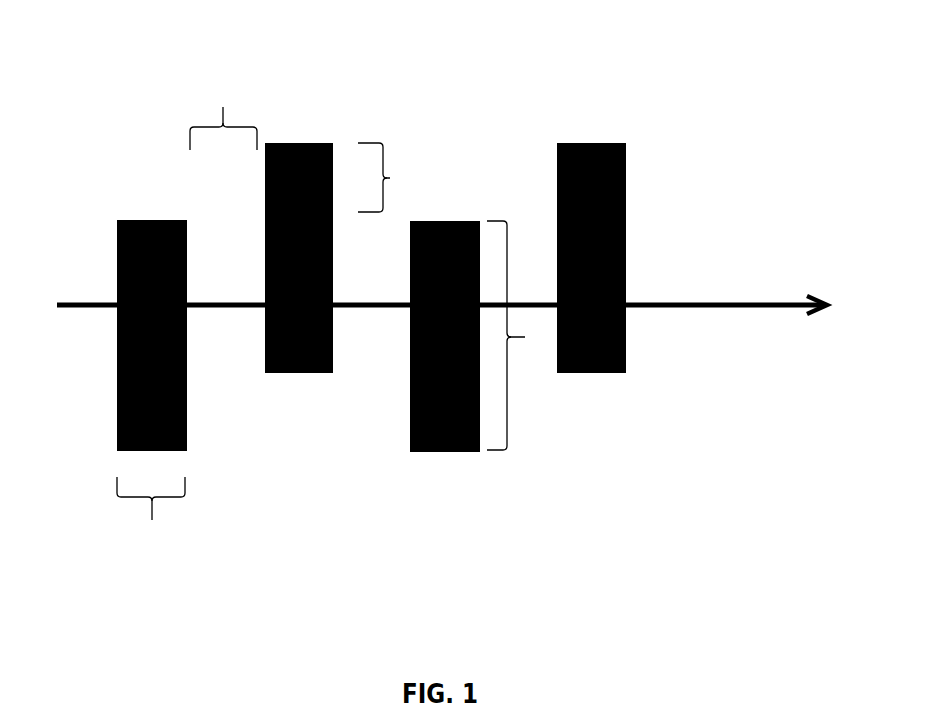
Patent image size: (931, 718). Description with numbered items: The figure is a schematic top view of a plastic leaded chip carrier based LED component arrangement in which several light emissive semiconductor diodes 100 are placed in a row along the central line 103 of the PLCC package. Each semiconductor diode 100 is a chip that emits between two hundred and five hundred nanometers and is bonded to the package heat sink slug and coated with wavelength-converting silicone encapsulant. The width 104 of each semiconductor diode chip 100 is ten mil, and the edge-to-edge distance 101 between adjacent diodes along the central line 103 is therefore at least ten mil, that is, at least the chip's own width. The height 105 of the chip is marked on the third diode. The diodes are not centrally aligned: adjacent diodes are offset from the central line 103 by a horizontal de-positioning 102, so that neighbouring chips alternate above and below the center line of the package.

The light emissive semiconductor diode 100 is at (152, 220).
The distance between diodes 101 is at (223, 107).
The horizontal de-positioning of adjacent diodes 102 is at (442, 118).
The central line 103 is at (666, 303).
The width of the semiconductor diode chip 104 is at (152, 520).
The height of the semiconductor diode chip 105 is at (525, 337).